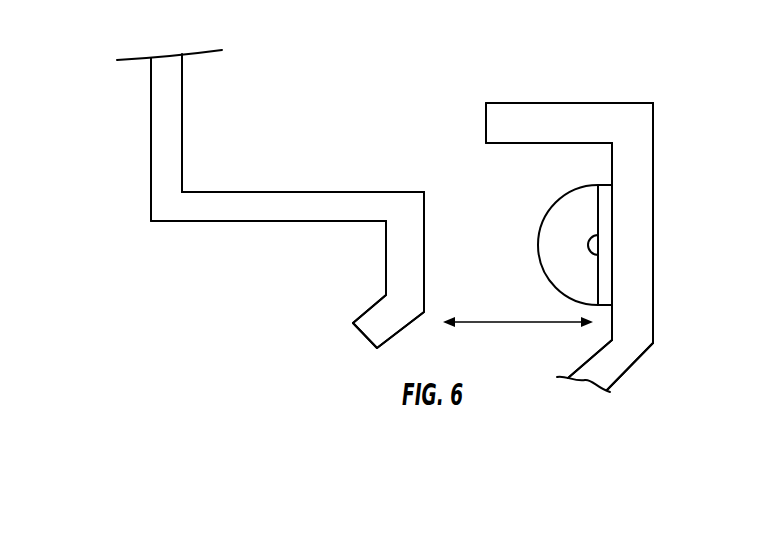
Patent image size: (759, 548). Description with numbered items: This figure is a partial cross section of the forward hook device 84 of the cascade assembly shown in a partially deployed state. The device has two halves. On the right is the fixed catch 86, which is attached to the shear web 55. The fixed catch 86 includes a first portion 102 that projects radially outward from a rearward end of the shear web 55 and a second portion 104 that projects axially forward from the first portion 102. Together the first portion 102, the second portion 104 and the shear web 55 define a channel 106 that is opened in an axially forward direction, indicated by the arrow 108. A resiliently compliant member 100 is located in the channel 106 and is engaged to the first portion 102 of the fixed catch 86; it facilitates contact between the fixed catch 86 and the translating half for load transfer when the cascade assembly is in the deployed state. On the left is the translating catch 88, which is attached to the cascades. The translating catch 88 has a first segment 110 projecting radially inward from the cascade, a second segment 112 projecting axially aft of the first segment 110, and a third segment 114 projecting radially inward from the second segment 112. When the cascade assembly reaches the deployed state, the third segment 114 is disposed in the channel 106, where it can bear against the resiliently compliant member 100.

The forward hook device 84 is at (187, 273).
The fixed catch 86 is at (597, 104).
The translating catch 88 is at (250, 222).
The first segment 110 is at (182, 128).
The second segment 112 is at (347, 192).
The third segment 114 is at (424, 262).
The resiliently compliant member 100 is at (548, 220).
The first portion 102 is at (653, 207).
The second portion 104 is at (520, 103).
The channel 106 is at (568, 172).
The arrow 108 is at (547, 322).
The shear web 55 is at (612, 365).